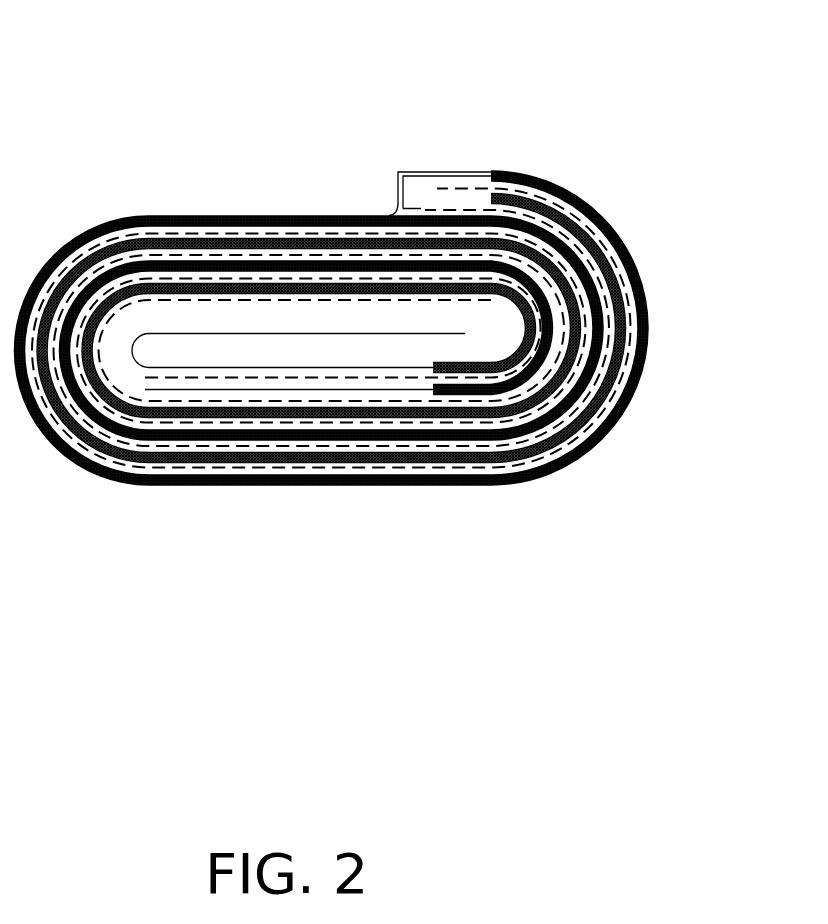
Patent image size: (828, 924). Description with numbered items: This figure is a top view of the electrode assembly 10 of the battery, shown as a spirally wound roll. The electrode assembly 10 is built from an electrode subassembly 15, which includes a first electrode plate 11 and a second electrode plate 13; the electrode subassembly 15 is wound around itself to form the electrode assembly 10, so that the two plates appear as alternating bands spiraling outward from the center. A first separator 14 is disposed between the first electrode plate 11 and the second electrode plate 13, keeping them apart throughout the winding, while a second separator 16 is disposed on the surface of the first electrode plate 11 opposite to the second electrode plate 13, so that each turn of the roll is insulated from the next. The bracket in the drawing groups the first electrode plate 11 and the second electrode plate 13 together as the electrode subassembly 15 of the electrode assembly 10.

The electrode assembly 10 is at (166, 45).
The first electrode plate 11 is at (523, 297).
The second electrode plate 13 is at (568, 193).
The first separator 14 is at (535, 462).
The electrode subassembly 15 is at (682, 154).
The second separator 16 is at (202, 299).